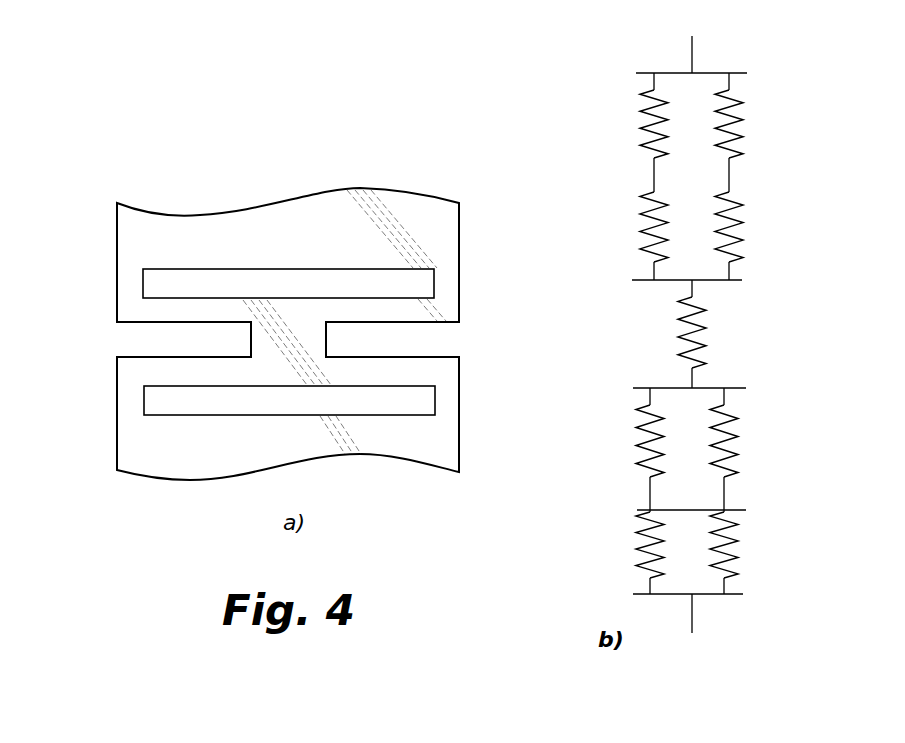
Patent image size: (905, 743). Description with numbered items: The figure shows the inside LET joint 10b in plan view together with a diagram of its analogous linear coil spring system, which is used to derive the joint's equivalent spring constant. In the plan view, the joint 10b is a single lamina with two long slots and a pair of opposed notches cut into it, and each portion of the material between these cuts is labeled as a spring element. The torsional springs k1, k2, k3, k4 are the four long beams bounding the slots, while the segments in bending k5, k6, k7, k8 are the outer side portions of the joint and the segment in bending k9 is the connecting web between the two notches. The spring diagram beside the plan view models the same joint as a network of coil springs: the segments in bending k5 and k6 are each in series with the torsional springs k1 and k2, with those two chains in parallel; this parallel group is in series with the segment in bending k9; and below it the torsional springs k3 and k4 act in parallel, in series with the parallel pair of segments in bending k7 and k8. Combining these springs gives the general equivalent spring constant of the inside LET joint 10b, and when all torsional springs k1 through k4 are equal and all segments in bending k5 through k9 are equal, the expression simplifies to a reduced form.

The inside LET joint 10b is at (106, 181).
The torsional spring k1 is at (405, 245).
The torsional spring k2 is at (577, 245).
The torsional spring k3 is at (404, 431).
The torsional spring k4 is at (572, 434).
The segment in bending k5 is at (378, 206).
The segment in bending k6 is at (620, 206).
The segment in bending k7 is at (376, 467).
The segment in bending k8 is at (616, 467).
The segment in bending k9 is at (533, 332).